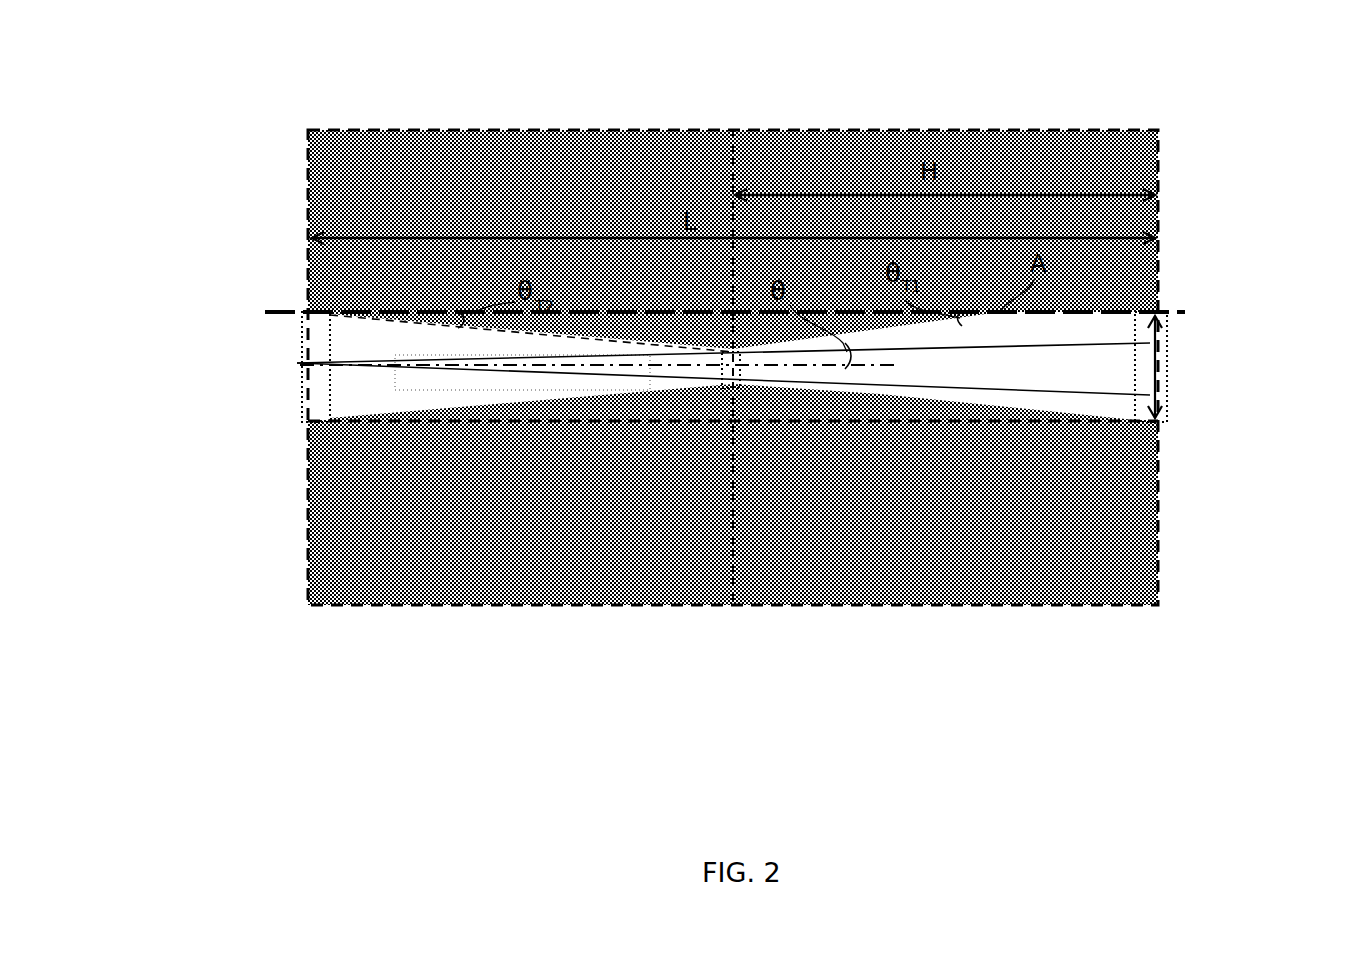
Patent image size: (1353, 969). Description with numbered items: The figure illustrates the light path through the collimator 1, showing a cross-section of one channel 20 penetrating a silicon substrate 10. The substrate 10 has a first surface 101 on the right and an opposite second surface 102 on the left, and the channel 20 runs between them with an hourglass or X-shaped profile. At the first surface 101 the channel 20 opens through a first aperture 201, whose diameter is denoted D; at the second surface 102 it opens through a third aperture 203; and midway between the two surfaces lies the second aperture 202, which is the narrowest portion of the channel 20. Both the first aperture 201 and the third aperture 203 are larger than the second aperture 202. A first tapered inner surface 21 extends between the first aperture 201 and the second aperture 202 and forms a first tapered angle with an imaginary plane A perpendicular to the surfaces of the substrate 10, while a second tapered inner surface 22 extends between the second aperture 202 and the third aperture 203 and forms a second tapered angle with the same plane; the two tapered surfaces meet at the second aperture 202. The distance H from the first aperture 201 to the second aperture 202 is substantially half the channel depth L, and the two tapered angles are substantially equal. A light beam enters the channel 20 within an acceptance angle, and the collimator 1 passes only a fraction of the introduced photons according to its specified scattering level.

The collimator 1 is at (1272, 14).
The substrate 10 is at (806, 546).
The channel 20 is at (1012, 372).
The first tapered inner surface 21 is at (939, 409).
The second tapered inner surface 22 is at (580, 398).
The first surface 101 is at (1158, 165).
The second surface 102 is at (308, 165).
The first aperture 201 is at (1165, 320).
The second aperture 202 is at (733, 351).
The third aperture 203 is at (300, 401).